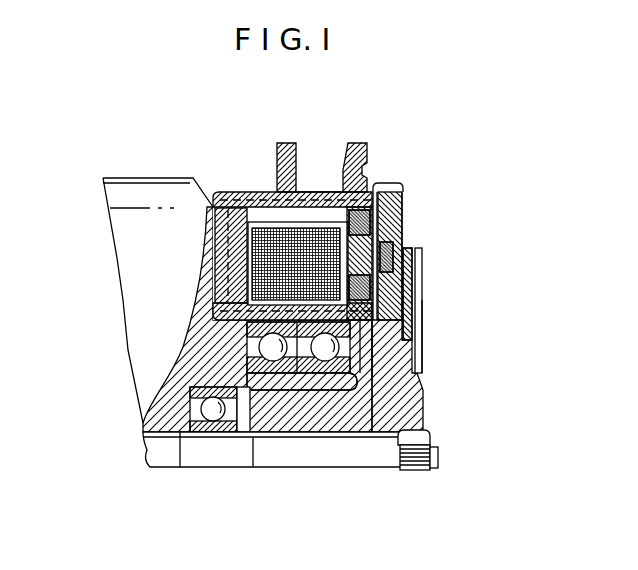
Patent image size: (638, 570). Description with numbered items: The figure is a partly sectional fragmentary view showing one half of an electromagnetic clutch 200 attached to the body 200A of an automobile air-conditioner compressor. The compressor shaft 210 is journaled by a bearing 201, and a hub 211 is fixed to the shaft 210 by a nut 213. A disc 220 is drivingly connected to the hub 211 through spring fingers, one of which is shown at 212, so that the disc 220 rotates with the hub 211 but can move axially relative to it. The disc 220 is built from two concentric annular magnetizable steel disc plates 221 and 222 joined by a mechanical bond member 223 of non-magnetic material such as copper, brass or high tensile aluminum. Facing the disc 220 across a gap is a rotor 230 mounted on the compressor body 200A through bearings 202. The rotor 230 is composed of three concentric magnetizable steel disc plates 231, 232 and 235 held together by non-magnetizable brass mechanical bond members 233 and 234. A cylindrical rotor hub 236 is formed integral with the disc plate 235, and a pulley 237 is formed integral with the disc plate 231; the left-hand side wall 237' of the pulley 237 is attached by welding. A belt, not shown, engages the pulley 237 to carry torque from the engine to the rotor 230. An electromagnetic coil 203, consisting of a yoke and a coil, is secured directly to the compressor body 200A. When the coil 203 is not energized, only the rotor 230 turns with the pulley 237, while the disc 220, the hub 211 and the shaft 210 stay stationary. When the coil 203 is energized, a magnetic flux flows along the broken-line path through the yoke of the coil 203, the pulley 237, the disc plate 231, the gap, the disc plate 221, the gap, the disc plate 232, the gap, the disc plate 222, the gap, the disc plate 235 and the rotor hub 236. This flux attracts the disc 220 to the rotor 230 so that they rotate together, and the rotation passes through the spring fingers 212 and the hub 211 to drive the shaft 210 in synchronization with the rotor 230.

The electromagnetic clutch 200 is at (364, 128).
The body of compressor 200A is at (128, 183).
The bearing 201 is at (213, 433).
The bearings 202 is at (212, 347).
The electromagnetic coil 203 is at (258, 230).
The shaft 210 is at (325, 462).
The hub 211 is at (412, 407).
The spring finger 212 is at (415, 307).
The nut 213 is at (420, 462).
The disc 220 is at (418, 230).
The disc plate 221 is at (410, 228).
The disc plate 222 is at (418, 292).
The mechanical bond member 223 is at (417, 256).
The rotor 230 is at (376, 157).
The disc plate 231 is at (385, 193).
The disc plate 232 is at (392, 281).
The mechanical bond member 233 is at (338, 218).
The mechanical bond member 234 is at (382, 335).
The disc plate 235 is at (390, 352).
The rotor hub 236 is at (250, 342).
The pulley 237 is at (385, 157).
The left-hand side wall of pulley 237' is at (259, 142).